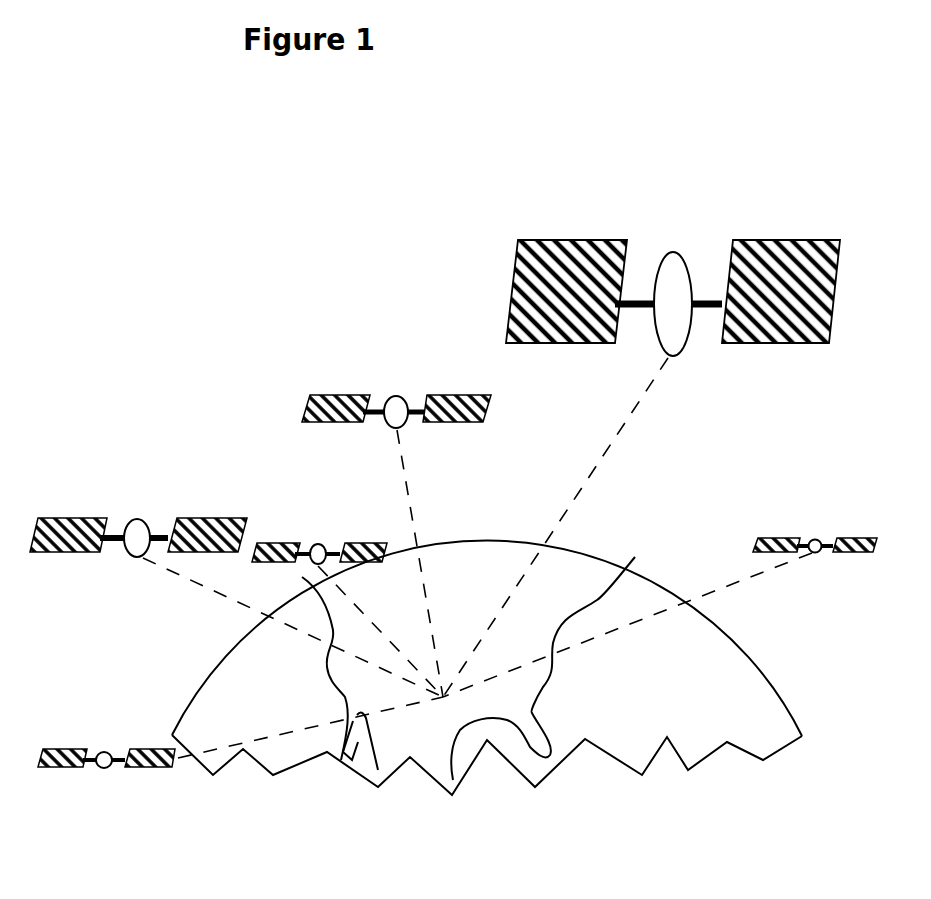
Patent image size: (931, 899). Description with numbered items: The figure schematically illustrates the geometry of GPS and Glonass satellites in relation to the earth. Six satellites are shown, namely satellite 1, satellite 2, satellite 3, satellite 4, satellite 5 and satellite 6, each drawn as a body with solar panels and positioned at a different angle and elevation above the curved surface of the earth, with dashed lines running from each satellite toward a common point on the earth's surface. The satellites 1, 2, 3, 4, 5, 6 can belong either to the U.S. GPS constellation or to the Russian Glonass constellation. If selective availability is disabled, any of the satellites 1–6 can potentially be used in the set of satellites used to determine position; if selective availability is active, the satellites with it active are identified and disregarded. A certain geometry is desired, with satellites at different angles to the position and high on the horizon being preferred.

The satellite 1 is at (140, 507).
The satellite 2 is at (416, 384).
The satellite 3 is at (742, 213).
The satellite 4 is at (798, 527).
The satellite 5 is at (316, 535).
The satellite 6 is at (101, 735).